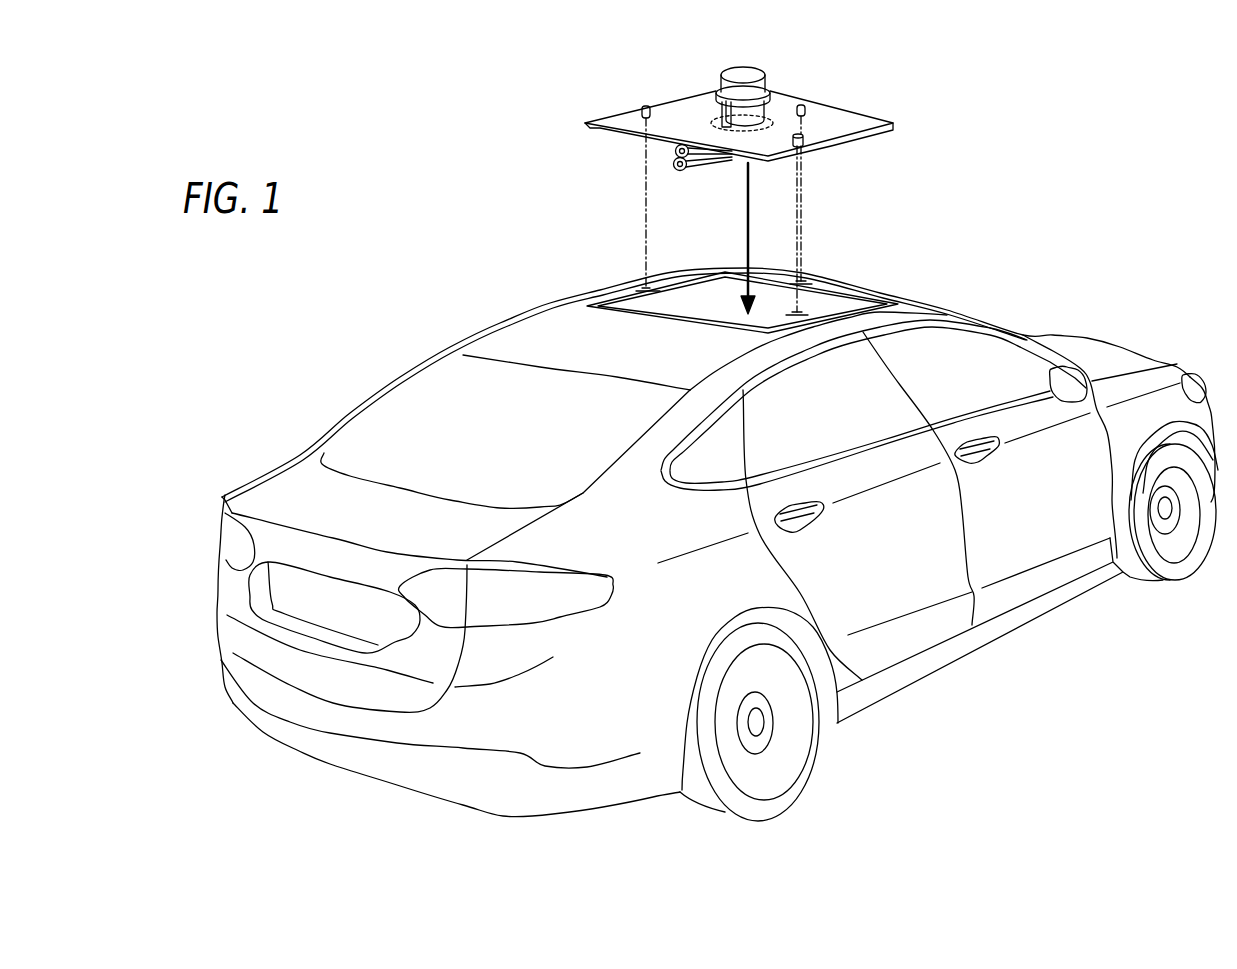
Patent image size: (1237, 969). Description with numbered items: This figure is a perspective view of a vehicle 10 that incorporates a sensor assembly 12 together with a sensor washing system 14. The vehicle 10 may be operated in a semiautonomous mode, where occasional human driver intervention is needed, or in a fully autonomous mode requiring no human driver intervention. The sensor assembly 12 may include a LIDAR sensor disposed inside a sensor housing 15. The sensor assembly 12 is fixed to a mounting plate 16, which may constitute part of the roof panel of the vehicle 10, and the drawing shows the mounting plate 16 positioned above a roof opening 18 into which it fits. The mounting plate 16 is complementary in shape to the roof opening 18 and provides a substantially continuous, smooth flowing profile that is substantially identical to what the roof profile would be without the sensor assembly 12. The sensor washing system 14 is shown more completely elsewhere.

The vehicle 10 is at (1078, 232).
The sensor assembly 12 is at (766, 66).
The sensor washing system 14 is at (717, 90).
The sensor housing 15 is at (757, 66).
The mounting plate 16 is at (840, 107).
The roof opening 18 is at (694, 279).